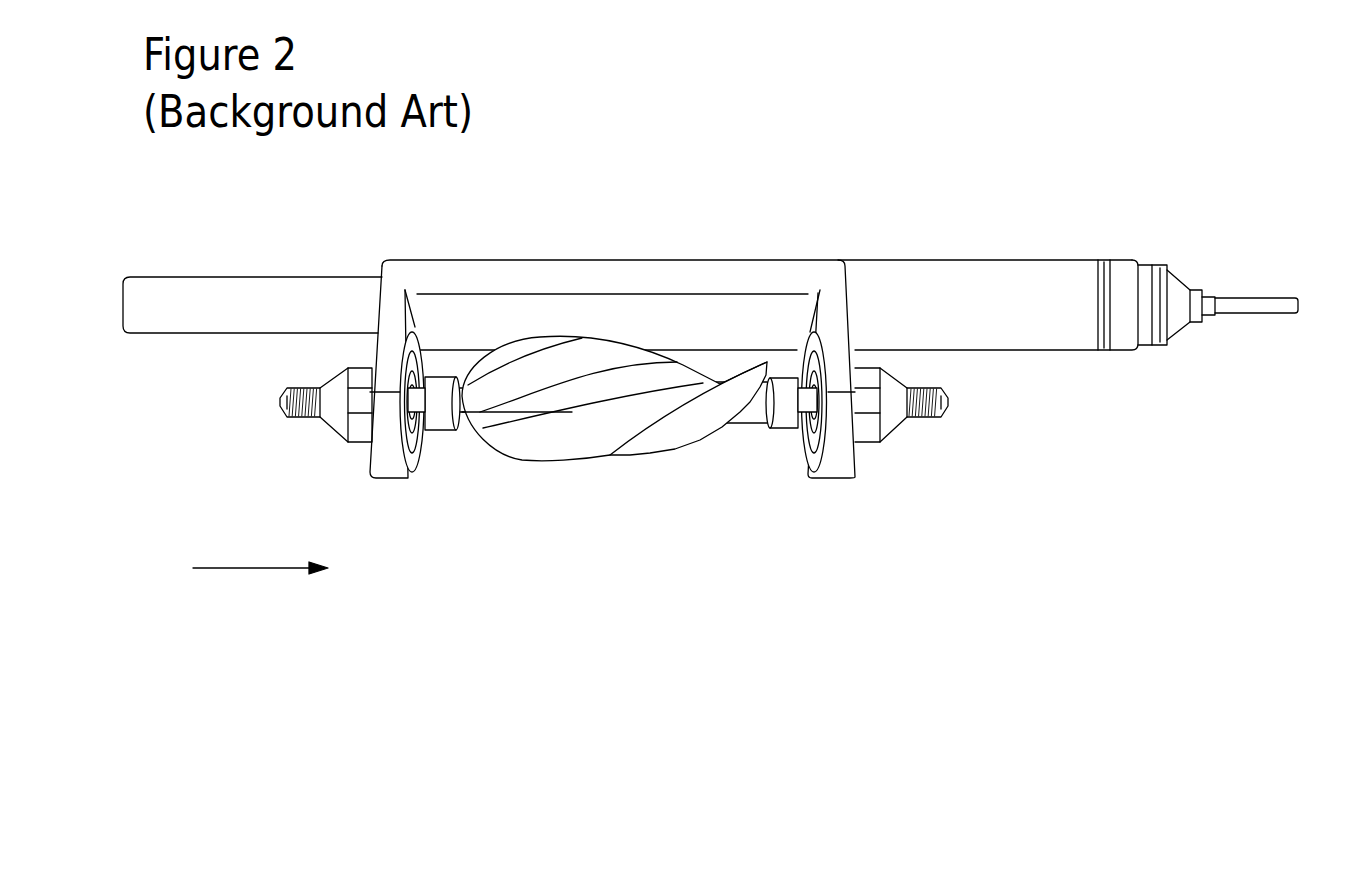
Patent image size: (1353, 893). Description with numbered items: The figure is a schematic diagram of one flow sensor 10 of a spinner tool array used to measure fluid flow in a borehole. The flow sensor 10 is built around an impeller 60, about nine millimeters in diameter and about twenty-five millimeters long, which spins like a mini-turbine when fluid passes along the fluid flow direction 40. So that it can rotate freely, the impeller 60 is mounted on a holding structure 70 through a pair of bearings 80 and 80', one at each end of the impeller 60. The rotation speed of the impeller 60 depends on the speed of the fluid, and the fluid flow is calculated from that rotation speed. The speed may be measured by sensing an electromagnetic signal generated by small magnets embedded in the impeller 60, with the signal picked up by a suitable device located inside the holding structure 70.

The flow sensor 10 is at (390, 229).
The fluid flow direction 40 is at (260, 557).
The impeller 60 is at (589, 443).
The holding structure 70 is at (1010, 333).
The bearing 80 is at (430, 423).
The bearing 80' is at (796, 428).